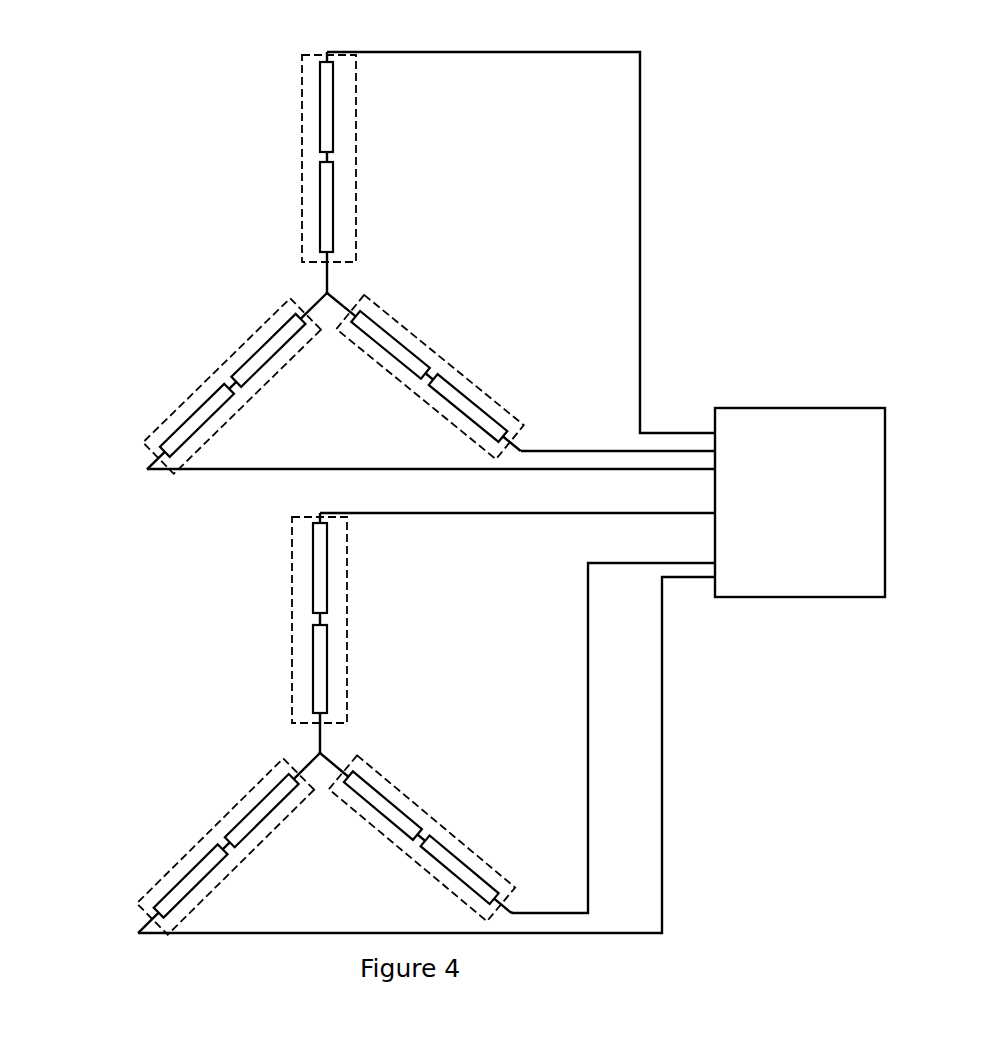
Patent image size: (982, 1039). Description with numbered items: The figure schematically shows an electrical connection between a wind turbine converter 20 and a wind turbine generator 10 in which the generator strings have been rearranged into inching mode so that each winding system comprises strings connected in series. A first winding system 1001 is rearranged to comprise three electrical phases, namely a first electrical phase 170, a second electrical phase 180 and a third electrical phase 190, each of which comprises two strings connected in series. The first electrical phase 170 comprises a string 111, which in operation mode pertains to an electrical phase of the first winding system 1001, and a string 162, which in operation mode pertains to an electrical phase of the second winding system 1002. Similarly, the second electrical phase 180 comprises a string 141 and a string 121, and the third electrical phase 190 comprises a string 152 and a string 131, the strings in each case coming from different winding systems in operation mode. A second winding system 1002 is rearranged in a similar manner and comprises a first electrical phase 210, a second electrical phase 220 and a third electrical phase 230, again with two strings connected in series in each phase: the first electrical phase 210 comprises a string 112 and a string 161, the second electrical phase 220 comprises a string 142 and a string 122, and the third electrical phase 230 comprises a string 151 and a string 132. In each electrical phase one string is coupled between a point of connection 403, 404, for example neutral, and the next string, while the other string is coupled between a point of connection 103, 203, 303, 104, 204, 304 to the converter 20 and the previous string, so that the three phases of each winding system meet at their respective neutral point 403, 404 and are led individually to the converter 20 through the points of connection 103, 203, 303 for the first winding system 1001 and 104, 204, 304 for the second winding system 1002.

The wind turbine generator 10 is at (763, 165).
The wind turbine converter 20 is at (802, 408).
The first winding system 1001 is at (155, 237).
The second winding system 1002 is at (150, 670).
The point of connection 103 is at (552, 52).
The point of connection 104 is at (540, 513).
The point of connection 203 is at (302, 469).
The point of connection 204 is at (292, 933).
The point of connection 303 is at (558, 451).
The point of connection 304 is at (590, 717).
The point of connection 403 is at (333, 292).
The point of connection 404 is at (320, 753).
The first electrical phase 170 is at (284, 158).
The second electrical phase 180 is at (209, 352).
The third electrical phase 190 is at (449, 340).
The first electrical phase 210 is at (262, 624).
The second electrical phase 220 is at (203, 817).
The third electrical phase 230 is at (441, 802).
The string 111 is at (325, 88).
The string 112 is at (318, 553).
The string 121 is at (190, 413).
The string 122 is at (190, 883).
The string 131 is at (480, 390).
The string 132 is at (452, 865).
The string 141 is at (265, 352).
The string 142 is at (258, 818).
The string 151 is at (388, 808).
The string 152 is at (395, 343).
The string 161 is at (318, 637).
The string 162 is at (325, 173).